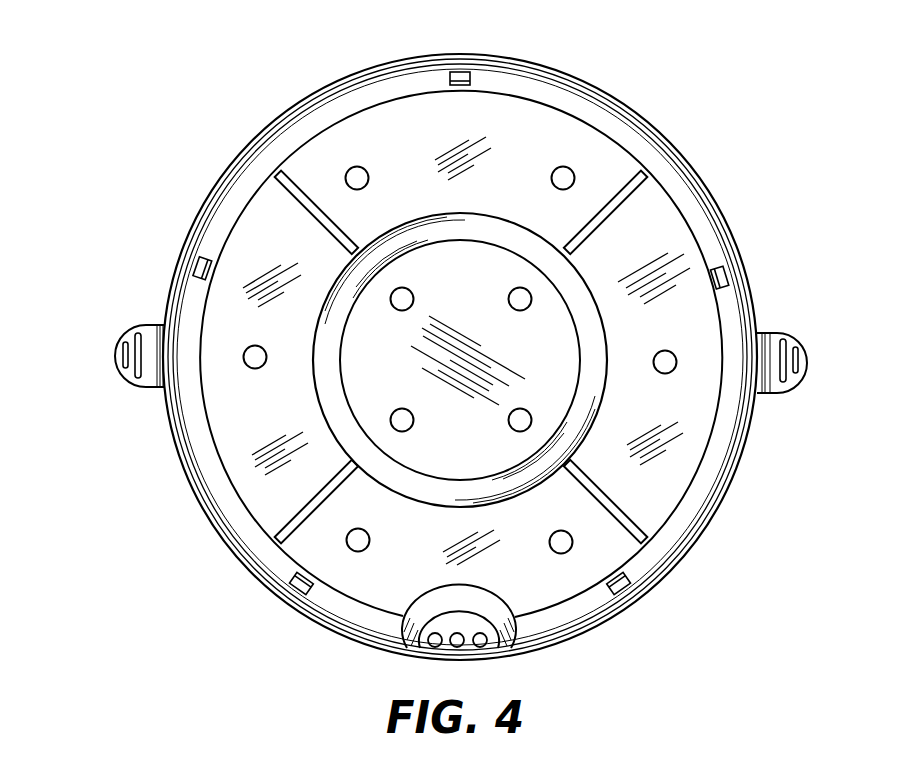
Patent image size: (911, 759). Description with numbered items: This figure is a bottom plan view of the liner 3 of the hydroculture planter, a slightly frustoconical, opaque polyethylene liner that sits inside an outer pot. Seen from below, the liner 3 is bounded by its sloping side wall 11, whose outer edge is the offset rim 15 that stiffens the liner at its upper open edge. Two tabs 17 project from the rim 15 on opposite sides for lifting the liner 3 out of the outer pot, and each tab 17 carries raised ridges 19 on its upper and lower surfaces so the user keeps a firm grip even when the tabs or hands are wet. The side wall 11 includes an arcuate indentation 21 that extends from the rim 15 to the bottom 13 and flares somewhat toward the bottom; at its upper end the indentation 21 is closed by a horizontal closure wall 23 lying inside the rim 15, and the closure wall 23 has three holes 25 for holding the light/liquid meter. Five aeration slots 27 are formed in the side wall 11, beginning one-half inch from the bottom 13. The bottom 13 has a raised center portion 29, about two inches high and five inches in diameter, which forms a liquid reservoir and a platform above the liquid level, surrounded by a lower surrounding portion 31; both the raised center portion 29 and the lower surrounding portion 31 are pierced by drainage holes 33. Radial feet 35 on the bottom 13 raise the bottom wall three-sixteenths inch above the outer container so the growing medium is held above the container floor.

The liner 3 is at (735, 218).
The side wall 11 is at (638, 143).
The bottom 13 is at (638, 227).
The offset rim 15 is at (213, 205).
The tabs 17 is at (130, 383).
The raised ridges 19 is at (122, 353).
The arcuate indentation 21 is at (488, 605).
The horizontal closure wall 23 is at (473, 623).
The holes 25 is at (432, 645).
The aeration slots 27 is at (458, 70).
The raised center portion 29 is at (368, 378).
The lower surrounding portion 31 is at (505, 152).
The drainage holes 33 is at (355, 168).
The radial feet 35 is at (302, 188).